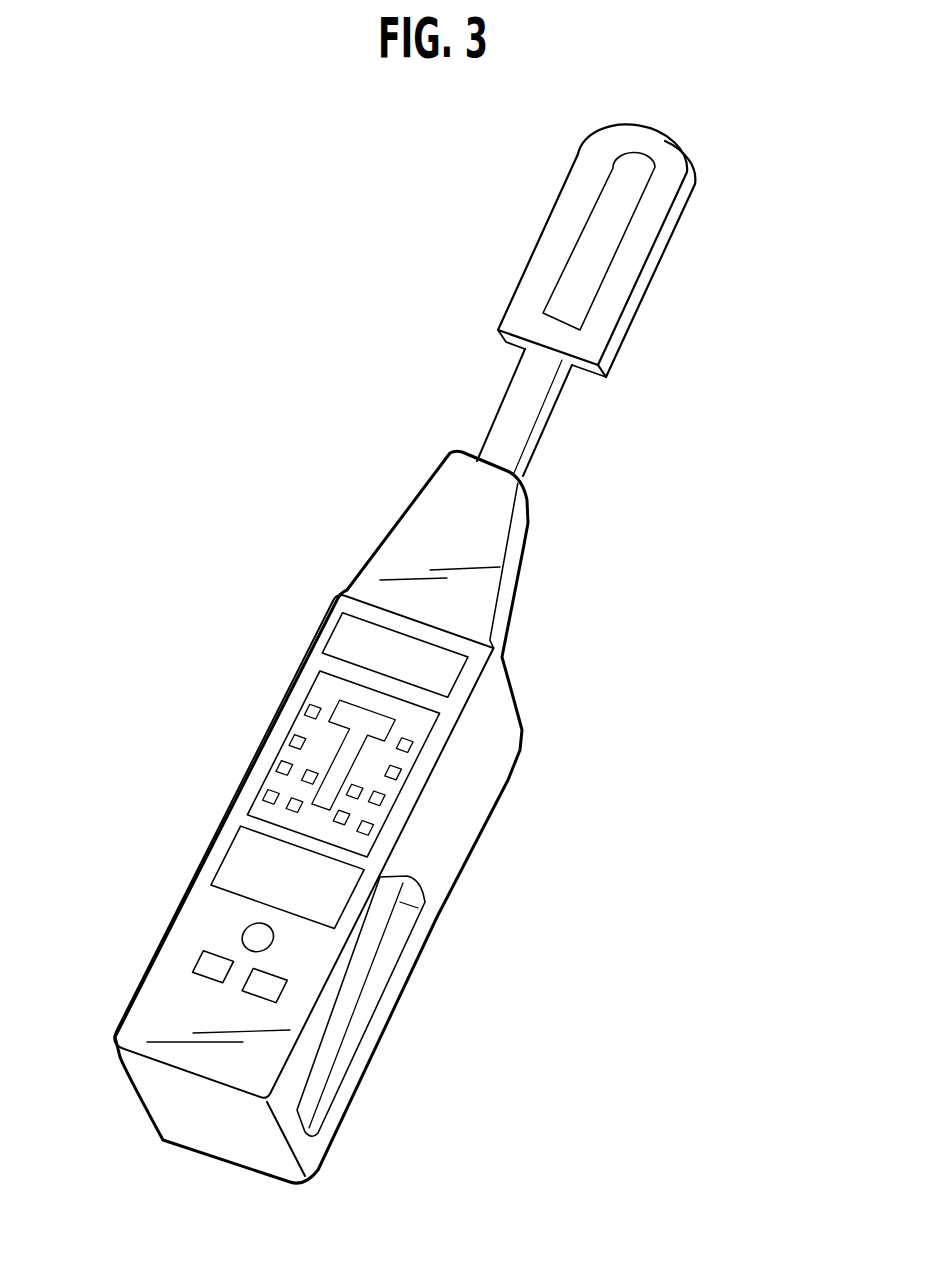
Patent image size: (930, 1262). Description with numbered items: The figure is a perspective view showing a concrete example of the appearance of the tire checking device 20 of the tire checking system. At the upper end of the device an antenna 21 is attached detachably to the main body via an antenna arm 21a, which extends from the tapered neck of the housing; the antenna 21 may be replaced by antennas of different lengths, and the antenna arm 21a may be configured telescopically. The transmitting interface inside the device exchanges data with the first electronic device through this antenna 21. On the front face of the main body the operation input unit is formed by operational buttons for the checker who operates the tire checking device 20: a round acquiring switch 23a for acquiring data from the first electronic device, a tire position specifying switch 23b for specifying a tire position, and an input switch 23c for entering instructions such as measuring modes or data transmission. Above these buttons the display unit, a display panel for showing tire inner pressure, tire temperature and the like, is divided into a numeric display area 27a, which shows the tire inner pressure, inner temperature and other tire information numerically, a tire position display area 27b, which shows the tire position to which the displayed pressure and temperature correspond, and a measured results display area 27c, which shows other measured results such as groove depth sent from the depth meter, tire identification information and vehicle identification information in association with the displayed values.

The tire checking device 20 is at (327, 433).
The antenna 21 is at (678, 222).
The antenna arm 21a is at (533, 394).
The acquiring switch 23a is at (246, 924).
The tire position specifying switch 23b is at (210, 963).
The input switch 23c is at (275, 987).
The numeric display area 27a is at (452, 682).
The tire position display area 27b is at (413, 783).
The measured results display area 27c is at (427, 906).